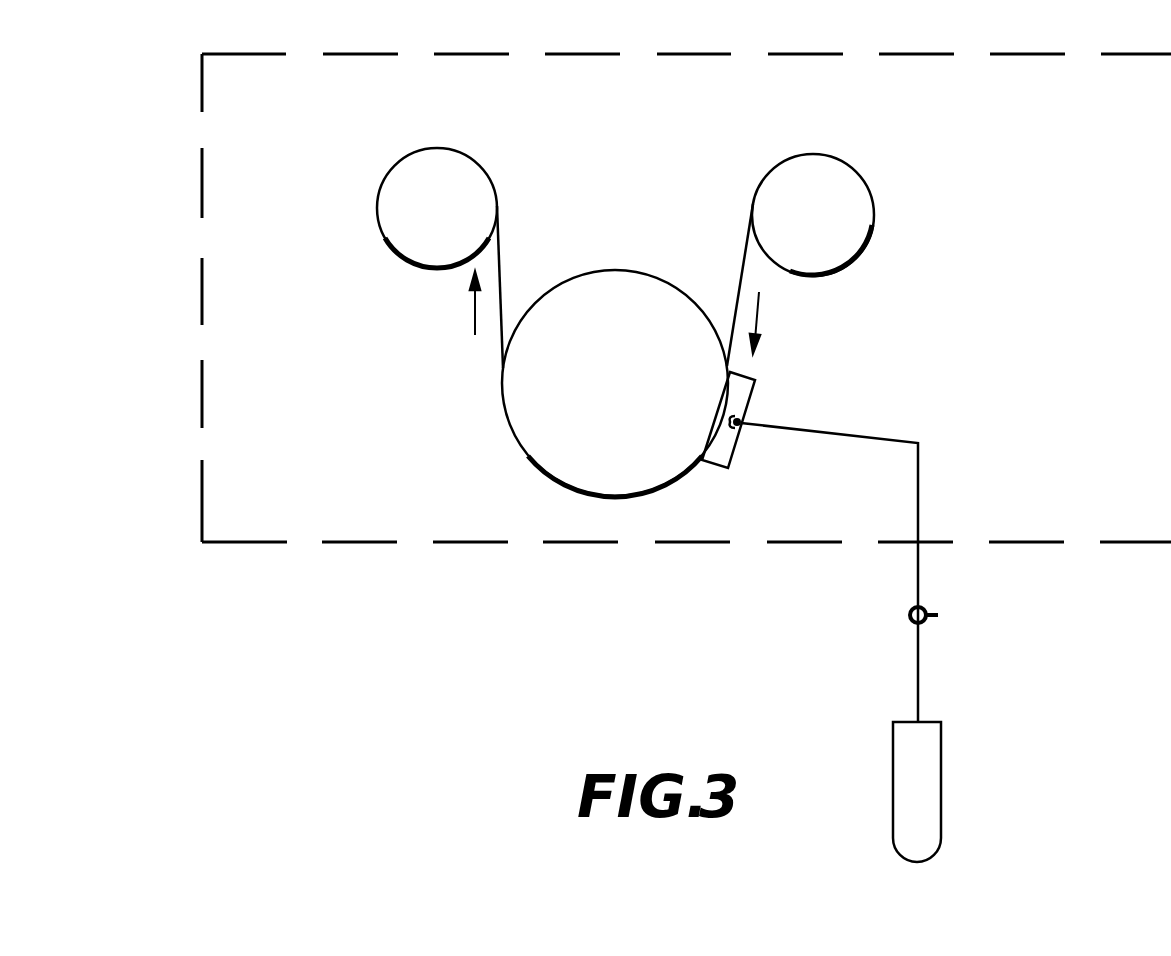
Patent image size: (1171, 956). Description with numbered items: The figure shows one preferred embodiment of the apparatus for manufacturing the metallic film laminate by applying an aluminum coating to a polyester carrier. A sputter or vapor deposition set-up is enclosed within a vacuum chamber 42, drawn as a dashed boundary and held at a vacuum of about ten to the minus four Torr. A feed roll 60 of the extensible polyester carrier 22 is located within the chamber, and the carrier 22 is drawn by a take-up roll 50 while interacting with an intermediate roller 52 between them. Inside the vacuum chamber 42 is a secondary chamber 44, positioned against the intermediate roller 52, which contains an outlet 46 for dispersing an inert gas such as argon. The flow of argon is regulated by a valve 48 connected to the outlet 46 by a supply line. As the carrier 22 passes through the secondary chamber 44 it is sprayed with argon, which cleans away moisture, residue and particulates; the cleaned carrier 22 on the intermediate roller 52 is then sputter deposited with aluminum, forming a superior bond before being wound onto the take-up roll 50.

The vacuum chamber 42 is at (685, 55).
The take-up roll 50 is at (459, 152).
The intermediate roller 52 is at (618, 270).
The feed roll 60 is at (850, 261).
The extensible polyester carrier 22 is at (743, 262).
The secondary chamber 44 is at (750, 405).
The outlet 46 is at (738, 430).
The valve 48 is at (918, 585).